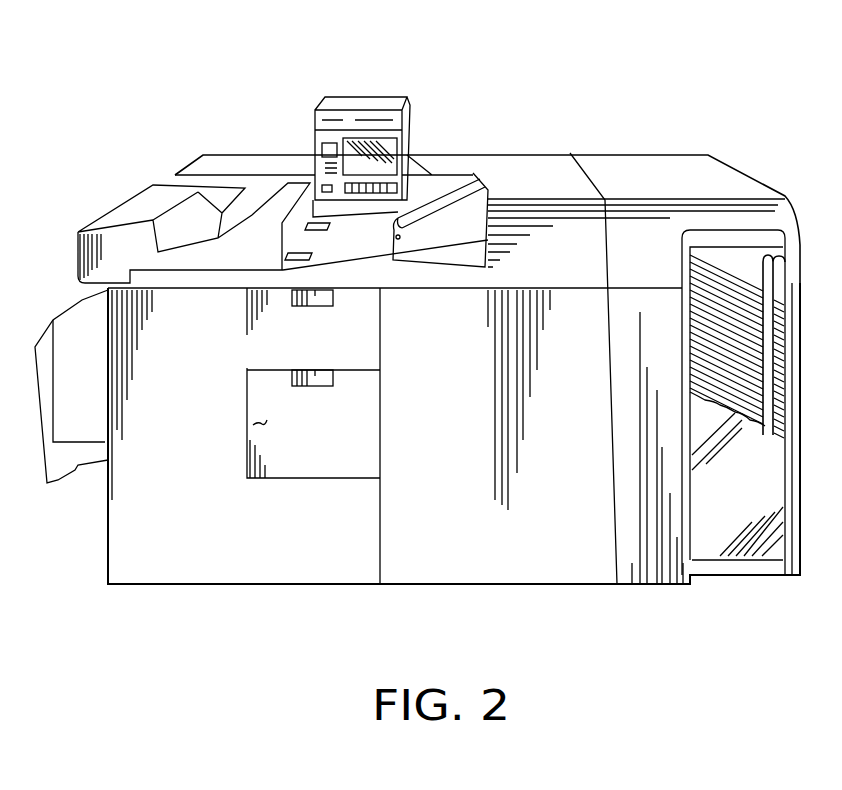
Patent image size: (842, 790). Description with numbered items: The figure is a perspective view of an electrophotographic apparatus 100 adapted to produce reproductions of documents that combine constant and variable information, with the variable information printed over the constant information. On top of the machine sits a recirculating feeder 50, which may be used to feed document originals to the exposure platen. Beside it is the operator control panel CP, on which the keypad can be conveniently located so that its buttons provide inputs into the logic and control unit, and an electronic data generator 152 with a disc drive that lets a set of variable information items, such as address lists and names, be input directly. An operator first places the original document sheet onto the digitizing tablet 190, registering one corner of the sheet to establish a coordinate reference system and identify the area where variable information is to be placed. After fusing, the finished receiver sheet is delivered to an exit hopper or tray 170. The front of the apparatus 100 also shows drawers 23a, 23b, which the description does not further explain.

The apparatus 100 is at (203, 100).
The recirculating feeder 50 is at (103, 213).
The operator control panel CP is at (313, 130).
The electronic data generator 152 is at (378, 97).
The exit hopper or tray 170 is at (438, 195).
The digitizing tablet 190 is at (373, 243).
The paper supply tray 23a is at (245, 335).
The paper supply tray 23b is at (245, 432).